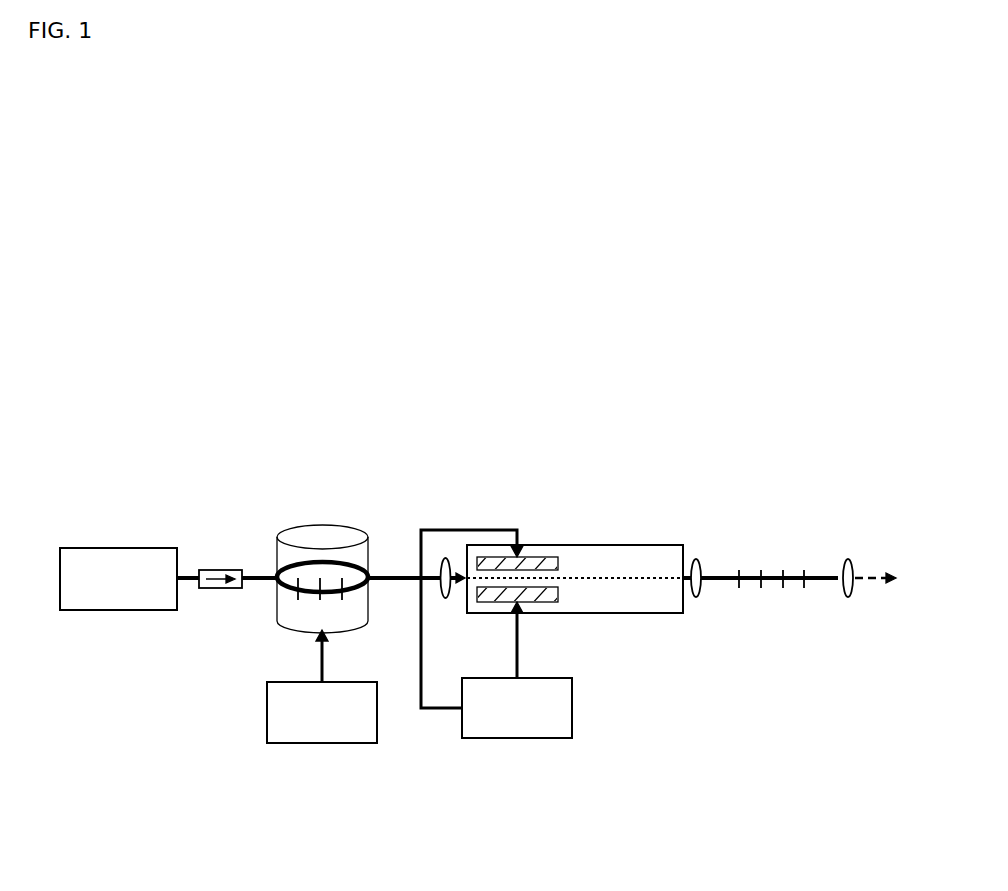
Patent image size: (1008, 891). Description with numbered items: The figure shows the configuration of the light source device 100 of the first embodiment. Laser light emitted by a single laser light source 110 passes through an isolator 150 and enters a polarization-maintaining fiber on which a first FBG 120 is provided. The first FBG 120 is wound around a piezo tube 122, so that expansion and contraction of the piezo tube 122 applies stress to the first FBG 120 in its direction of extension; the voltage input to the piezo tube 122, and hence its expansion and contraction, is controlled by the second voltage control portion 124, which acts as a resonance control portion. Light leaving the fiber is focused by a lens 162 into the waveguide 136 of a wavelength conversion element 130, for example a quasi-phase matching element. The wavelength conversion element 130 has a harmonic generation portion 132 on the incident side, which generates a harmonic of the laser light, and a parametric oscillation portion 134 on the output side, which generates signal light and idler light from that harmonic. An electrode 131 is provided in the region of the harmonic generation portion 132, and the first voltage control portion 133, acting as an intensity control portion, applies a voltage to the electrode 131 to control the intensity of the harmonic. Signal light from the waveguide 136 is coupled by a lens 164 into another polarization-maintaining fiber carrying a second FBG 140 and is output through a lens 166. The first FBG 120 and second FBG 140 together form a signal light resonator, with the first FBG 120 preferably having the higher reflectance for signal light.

The light source device 100 is at (893, 353).
The laser light source 110 is at (118, 547).
The first FBG 120 is at (352, 562).
The piezo tube 122 is at (299, 526).
The second voltage control portion 124 is at (320, 744).
The wavelength conversion element 130 is at (648, 476).
The electrode 131 is at (551, 603).
The harmonic generation portion 132 is at (572, 523).
The first voltage control portion 133 is at (515, 739).
The parametric oscillation portion 134 is at (678, 523).
The waveguide 136 is at (648, 581).
The second FBG 140 is at (792, 574).
The isolator 150 is at (222, 568).
The lens 162 is at (446, 560).
The lens 164 is at (698, 560).
The lens 166 is at (848, 561).